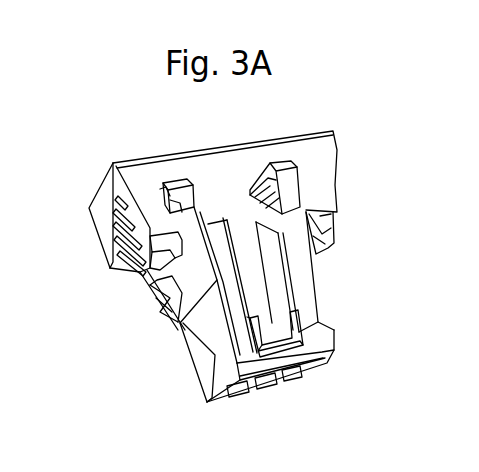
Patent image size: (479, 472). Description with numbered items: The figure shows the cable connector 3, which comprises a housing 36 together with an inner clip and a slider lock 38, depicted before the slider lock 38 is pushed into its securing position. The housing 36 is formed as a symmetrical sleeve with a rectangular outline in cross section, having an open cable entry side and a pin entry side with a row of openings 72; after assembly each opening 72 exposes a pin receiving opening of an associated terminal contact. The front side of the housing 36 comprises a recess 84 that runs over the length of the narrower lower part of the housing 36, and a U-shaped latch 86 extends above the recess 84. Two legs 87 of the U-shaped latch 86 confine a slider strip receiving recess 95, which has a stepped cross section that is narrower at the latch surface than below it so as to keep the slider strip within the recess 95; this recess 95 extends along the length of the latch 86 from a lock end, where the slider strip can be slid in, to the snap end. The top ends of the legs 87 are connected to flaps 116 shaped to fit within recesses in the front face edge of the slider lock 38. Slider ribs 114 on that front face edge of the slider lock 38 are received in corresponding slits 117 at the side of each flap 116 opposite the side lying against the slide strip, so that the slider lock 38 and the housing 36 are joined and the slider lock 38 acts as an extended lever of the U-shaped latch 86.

The cable connector 3 is at (401, 191).
The housing 36 is at (338, 337).
The slider lock 38 is at (325, 174).
The openings 72 is at (254, 404).
The recess 84 is at (302, 374).
The U-shaped latch 86 is at (294, 285).
The legs 87 is at (273, 274).
The slider strip receiving recess 95 is at (320, 318).
The slider ribs 114 is at (153, 190).
The flaps 116 is at (275, 197).
The slits 117 is at (164, 252).